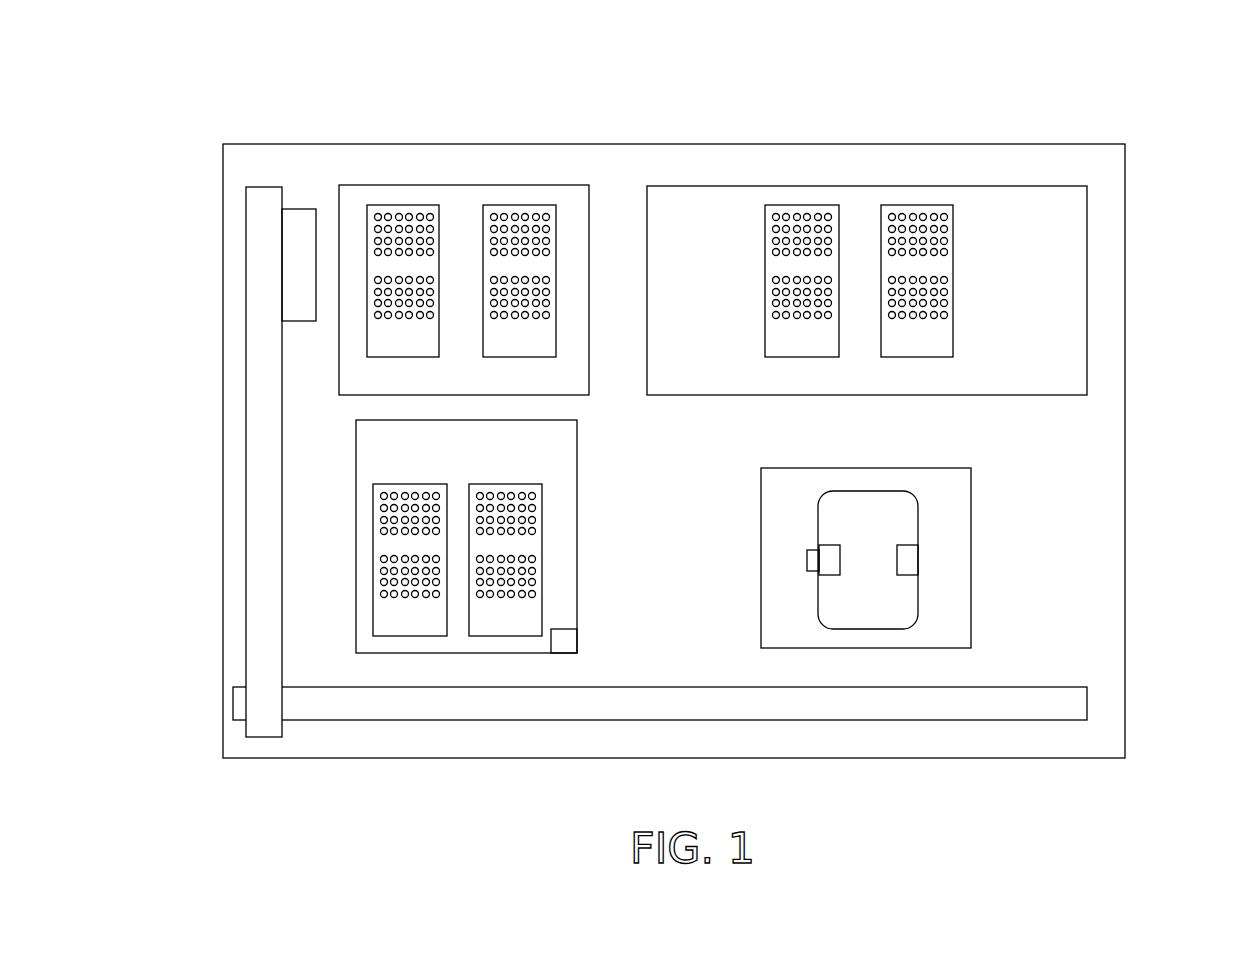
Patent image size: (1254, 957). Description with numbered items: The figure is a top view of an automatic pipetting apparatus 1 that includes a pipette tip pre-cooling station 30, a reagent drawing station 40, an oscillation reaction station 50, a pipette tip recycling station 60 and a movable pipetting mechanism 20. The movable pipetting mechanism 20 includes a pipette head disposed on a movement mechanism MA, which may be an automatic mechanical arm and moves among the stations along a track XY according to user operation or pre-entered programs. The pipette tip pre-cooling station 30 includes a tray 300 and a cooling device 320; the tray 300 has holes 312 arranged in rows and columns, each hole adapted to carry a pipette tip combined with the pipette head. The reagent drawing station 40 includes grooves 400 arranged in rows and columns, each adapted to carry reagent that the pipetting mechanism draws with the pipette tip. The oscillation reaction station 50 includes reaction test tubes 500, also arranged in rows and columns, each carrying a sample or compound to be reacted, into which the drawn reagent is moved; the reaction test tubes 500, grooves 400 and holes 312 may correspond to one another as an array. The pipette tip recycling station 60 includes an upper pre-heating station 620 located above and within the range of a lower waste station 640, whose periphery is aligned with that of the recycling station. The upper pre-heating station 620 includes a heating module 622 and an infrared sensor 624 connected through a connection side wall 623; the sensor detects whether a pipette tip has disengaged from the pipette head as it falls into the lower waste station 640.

The automatic pipetting apparatus 1 is at (1193, 806).
The movable pipetting mechanism 20 is at (300, 230).
The pipette tip pre-cooling station 30 is at (465, 619).
The tray 300 is at (423, 636).
The holes 312 is at (480, 597).
The cooling device 320 is at (565, 642).
The reagent drawing station 40 is at (464, 240).
The groove 400 is at (380, 215).
The oscillation reaction station 50 is at (867, 243).
The reaction test tube 500 is at (777, 210).
The pipette tip recycling station 60 is at (948, 608).
The upper pre-heating station 620 is at (892, 607).
The heating module 622 is at (912, 562).
The connection side wall 623 is at (807, 560).
The infrared sensor 624 is at (833, 568).
The lower waste station 640 is at (955, 499).
The track XY is at (258, 217).